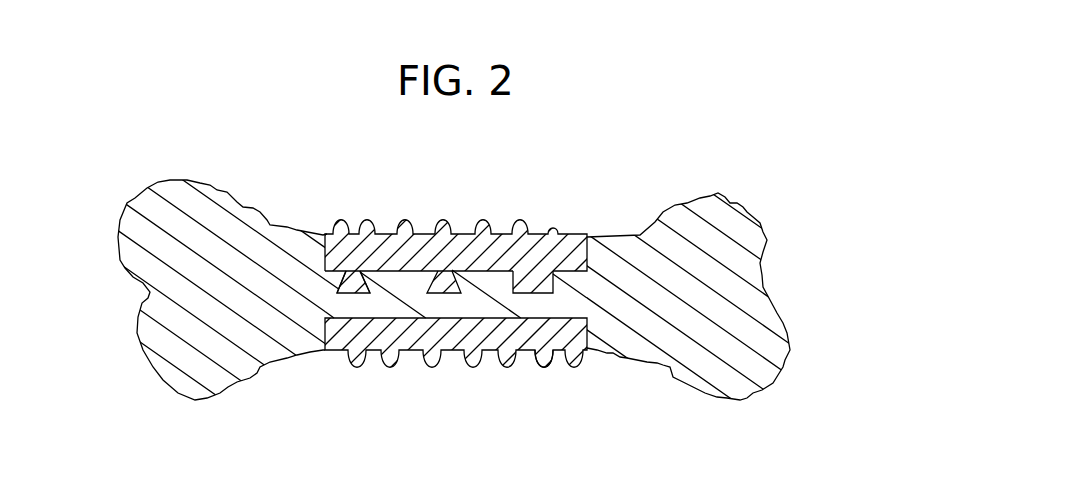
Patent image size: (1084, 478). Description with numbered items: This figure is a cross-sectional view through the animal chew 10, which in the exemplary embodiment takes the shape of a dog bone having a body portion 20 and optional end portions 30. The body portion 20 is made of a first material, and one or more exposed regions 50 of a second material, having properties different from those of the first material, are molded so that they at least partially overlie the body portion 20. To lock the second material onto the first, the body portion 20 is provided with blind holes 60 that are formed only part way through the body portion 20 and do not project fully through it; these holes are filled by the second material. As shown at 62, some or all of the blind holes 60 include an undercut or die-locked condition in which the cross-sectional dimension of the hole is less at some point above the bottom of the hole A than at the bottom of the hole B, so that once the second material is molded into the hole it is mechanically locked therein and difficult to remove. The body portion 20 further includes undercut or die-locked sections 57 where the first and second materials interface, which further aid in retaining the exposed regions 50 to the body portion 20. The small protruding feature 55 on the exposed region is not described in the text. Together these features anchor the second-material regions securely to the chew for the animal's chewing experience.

The animal chew 10 is at (270, 155).
The body portion 20 is at (573, 297).
The end portions 30 is at (710, 365).
The exposed regions 50 is at (487, 337).
The protrusion 55 is at (545, 353).
The undercut or die-locked sections 57 is at (328, 235).
The blind holes 60 is at (530, 277).
The undercut or die-locked condition 62 is at (450, 287).
The point above the bottom of the hole A is at (352, 275).
The bottom of the hole B is at (366, 272).